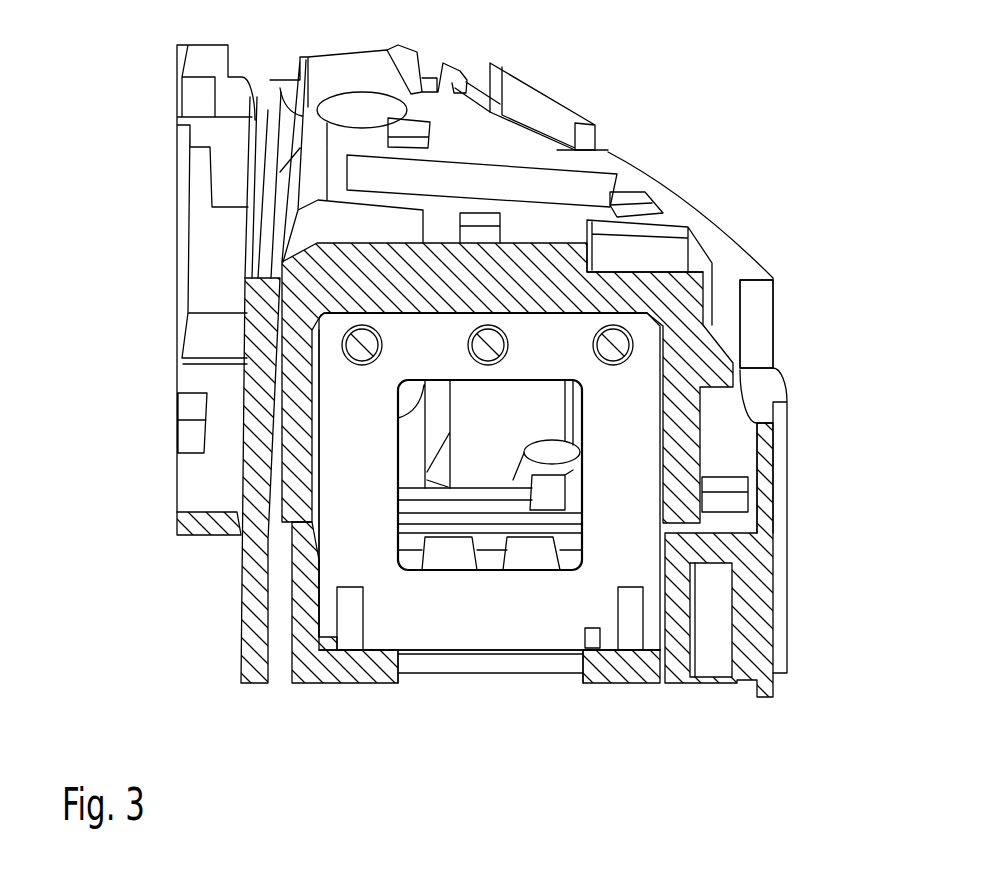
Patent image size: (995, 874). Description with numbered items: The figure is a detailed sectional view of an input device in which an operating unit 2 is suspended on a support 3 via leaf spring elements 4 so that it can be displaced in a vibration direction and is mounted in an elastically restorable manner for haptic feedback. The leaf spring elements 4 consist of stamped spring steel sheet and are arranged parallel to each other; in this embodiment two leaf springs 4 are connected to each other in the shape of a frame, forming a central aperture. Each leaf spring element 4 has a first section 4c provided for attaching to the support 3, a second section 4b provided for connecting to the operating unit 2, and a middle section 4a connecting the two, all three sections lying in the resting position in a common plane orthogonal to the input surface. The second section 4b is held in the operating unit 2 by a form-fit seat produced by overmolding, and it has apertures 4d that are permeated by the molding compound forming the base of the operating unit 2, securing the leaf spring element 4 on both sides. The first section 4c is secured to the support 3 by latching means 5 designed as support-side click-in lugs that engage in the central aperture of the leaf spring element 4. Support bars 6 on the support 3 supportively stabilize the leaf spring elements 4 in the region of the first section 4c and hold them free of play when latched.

The operating unit 2 is at (643, 283).
The support 3 is at (758, 318).
The leaf spring element 4 is at (465, 414).
The middle section 4a is at (346, 521).
The second section 4b is at (329, 324).
The first section 4c is at (396, 619).
The apertures 4d is at (330, 349).
The latching means 5 is at (527, 558).
The support bars 6 is at (634, 612).